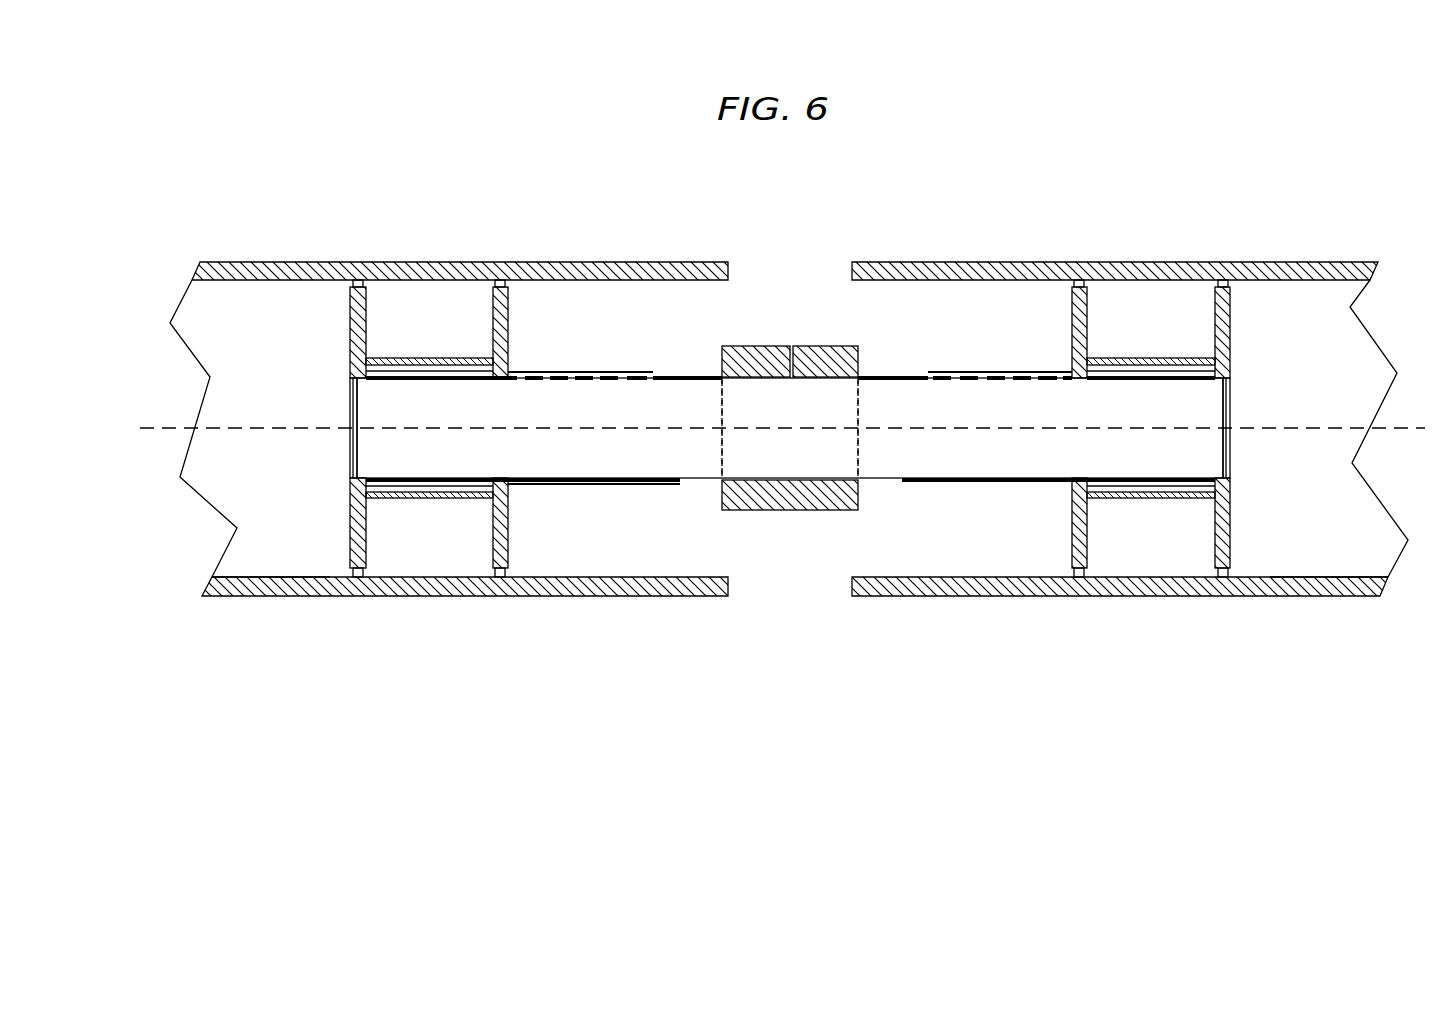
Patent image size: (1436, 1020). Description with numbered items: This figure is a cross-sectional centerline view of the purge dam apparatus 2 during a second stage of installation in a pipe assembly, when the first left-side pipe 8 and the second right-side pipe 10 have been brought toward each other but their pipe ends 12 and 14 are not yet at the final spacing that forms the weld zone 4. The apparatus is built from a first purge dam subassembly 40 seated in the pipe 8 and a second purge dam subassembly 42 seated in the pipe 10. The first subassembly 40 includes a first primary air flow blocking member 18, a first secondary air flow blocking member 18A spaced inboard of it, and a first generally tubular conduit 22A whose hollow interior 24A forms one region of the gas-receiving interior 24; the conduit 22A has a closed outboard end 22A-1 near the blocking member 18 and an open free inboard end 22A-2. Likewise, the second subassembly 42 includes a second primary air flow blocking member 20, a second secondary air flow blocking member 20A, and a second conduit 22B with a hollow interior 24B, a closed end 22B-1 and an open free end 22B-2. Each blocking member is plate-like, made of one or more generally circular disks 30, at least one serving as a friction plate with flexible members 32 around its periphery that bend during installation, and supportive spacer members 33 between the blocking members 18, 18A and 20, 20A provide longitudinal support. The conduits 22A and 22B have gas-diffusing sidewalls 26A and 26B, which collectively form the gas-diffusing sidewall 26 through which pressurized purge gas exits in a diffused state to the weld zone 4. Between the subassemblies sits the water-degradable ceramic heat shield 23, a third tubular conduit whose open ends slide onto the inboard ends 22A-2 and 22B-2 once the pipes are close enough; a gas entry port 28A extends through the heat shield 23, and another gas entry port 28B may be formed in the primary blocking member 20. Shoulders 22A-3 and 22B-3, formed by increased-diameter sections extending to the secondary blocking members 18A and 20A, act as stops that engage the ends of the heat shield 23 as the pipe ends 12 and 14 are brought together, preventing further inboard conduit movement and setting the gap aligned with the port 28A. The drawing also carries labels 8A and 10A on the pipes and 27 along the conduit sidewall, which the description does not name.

The purge dam apparatus 2 is at (315, 548).
The weld zone 4 is at (930, 549).
The first left-side pipe 8 is at (192, 362).
The first support surface 8A is at (268, 576).
The second right-side pipe 10 is at (1380, 337).
The second support surface 10A is at (1340, 576).
The first pipe end 12 is at (633, 262).
The second pipe end 14 is at (945, 262).
The first primary air flow blocking member 18 is at (367, 311).
The first secondary air flow blocking member 18A is at (509, 311).
The second primary air flow blocking member 20 is at (1231, 311).
The second secondary air flow blocking member 20A is at (1088, 311).
The first conduit 22A is at (557, 483).
The closed end of first conduit 22A-1 is at (352, 442).
The open free end of first conduit 22A-2 is at (722, 381).
The shoulder of first conduit 22A-3 is at (676, 372).
The second conduit 22B is at (1018, 483).
The closed end of second conduit 22B-1 is at (1225, 442).
The open free end of second conduit 22B-2 is at (858, 381).
The shoulder of second conduit 22B-3 is at (899, 372).
The water-degradable ceramic heat shield 23 is at (833, 346).
The gas-receiving interior 24 is at (1200, 410).
The hollow interior of first conduit 24A is at (440, 465).
The hollow interior of second conduit 24B is at (1095, 465).
The gas-diffusing sidewall 26 is at (619, 487).
The gas-diffusing sidewall of first conduit 26A is at (512, 373).
The gas-diffusing sidewall of second conduit 26B is at (1068, 373).
The segmented electrodes 27 is at (520, 375).
The gas entry port 28A is at (793, 346).
The gas entry port 28B is at (1228, 430).
The circular disks 30 is at (367, 346).
The flexible members 32 is at (372, 283).
The spacer members 33 is at (465, 498).
The first purge dam subassembly 40 is at (280, 302).
The second purge dam subassembly 42 is at (1318, 300).